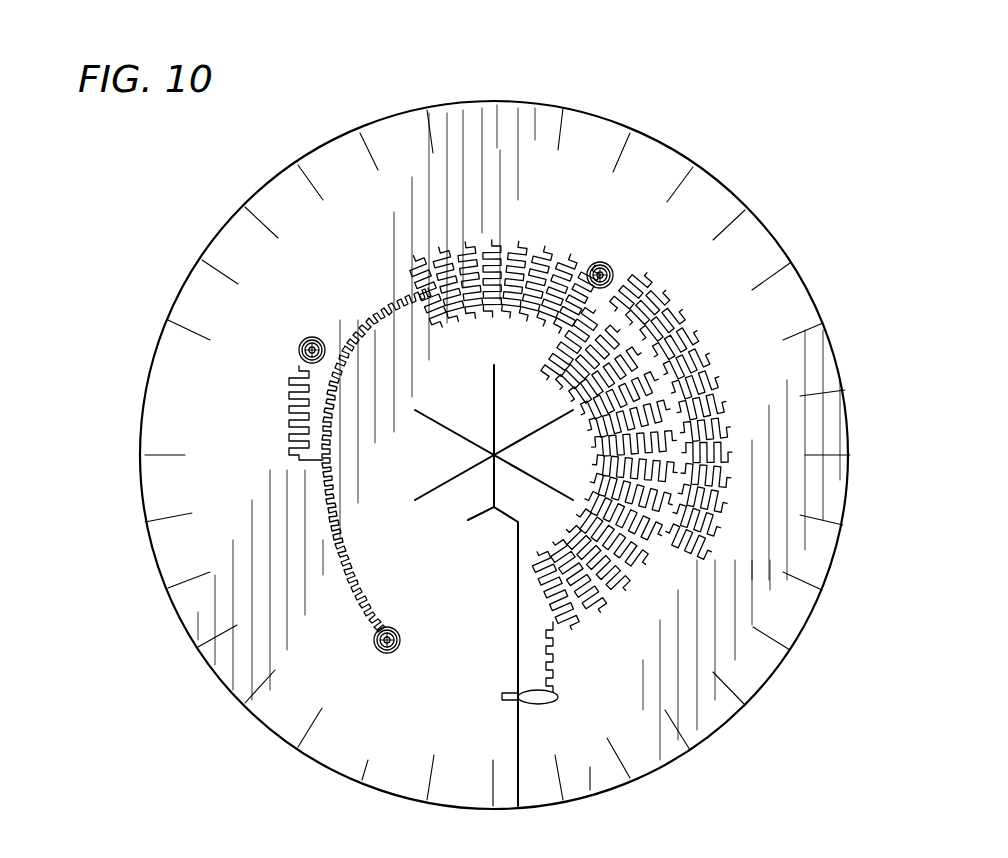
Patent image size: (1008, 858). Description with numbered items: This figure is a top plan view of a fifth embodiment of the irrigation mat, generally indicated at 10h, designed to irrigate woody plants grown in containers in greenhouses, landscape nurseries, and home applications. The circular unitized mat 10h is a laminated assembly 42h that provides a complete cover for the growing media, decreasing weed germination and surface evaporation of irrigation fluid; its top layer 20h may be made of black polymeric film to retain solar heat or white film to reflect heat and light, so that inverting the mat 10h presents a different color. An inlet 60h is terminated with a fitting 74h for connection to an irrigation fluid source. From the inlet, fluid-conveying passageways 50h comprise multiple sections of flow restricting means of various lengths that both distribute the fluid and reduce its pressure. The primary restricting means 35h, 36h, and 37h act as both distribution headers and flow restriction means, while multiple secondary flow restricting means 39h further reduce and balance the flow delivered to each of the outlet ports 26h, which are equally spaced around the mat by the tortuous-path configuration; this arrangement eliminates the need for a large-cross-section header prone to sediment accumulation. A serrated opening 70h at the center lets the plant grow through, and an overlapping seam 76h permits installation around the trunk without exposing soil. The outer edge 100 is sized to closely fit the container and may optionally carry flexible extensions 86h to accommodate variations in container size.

The outer edge 100 is at (138, 414).
The unitized mat 10h is at (162, 298).
The top layer 20h is at (224, 244).
The outlet ports 26h is at (300, 343).
The primary flow restricting means 35h is at (566, 364).
The primary flow restricting means 36h is at (410, 300).
The primary flow restricting means 37h is at (546, 244).
The secondary flow restricting means 39h is at (286, 390).
The laminated assembly 42h is at (330, 160).
The fluid-conveying passageways 50h is at (606, 266).
The inlet 60h is at (560, 694).
The serrated opening 70h is at (455, 436).
The fitting 74h is at (505, 697).
The overlapping seam 76h is at (460, 645).
The flexible extensions 86h is at (170, 456).